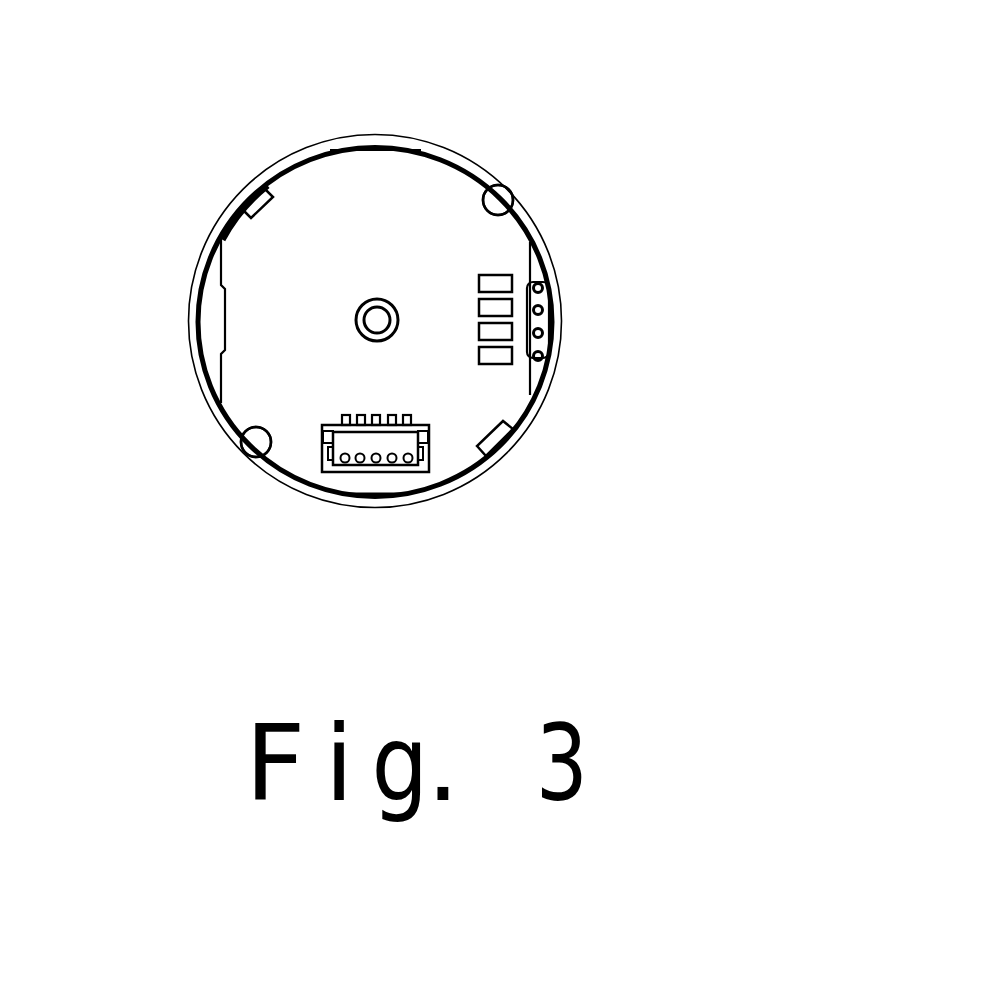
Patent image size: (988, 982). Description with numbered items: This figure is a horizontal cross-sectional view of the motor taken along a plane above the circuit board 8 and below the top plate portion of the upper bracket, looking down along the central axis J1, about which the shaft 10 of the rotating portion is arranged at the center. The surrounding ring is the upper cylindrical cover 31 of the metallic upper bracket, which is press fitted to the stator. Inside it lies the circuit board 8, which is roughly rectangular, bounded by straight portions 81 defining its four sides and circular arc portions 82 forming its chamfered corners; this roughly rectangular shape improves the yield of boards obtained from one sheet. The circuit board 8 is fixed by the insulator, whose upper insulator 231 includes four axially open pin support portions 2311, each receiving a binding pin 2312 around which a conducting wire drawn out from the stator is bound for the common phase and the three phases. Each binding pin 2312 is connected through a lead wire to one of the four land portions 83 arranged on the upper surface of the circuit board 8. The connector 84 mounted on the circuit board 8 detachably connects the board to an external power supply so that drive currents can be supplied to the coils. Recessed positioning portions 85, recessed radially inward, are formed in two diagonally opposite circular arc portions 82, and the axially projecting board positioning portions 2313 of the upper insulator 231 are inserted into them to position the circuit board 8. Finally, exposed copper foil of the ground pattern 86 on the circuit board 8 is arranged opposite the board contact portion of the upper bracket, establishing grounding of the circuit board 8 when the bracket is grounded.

The circuit board 8 is at (250, 403).
The shaft 10 is at (372, 327).
The upper cylindrical cover 31 is at (477, 167).
The straight portions 81 is at (372, 160).
The circular arc portions 82 is at (238, 225).
The land portions 83 is at (492, 283).
The connector 84 is at (408, 438).
The recessed positioning portions 85 is at (495, 203).
The ground pattern 86 is at (253, 195).
The upper insulator 231 is at (535, 374).
The pin support portions 2311 is at (540, 272).
The binding pins 2312 is at (545, 356).
The board positioning portions 2313 is at (497, 202).
The central axis J1 is at (377, 320).